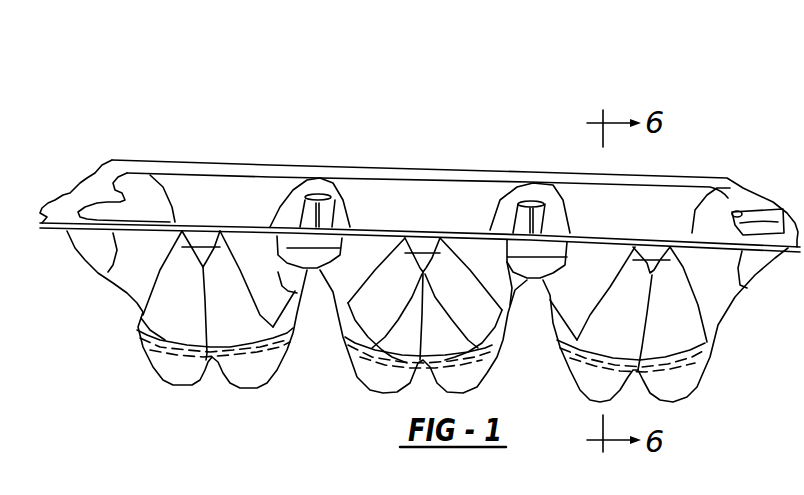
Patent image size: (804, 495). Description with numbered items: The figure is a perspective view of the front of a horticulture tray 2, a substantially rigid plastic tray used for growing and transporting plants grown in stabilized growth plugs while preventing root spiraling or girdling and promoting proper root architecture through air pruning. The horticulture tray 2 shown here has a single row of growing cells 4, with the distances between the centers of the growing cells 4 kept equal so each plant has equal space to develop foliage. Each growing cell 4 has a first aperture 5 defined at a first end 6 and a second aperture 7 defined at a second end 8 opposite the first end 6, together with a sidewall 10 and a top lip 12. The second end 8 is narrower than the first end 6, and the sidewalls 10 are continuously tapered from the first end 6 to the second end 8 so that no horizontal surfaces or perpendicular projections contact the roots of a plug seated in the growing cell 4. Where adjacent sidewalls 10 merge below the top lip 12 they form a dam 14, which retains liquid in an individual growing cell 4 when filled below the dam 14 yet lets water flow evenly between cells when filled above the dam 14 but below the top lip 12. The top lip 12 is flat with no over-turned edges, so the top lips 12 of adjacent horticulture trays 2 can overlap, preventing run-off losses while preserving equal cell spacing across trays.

The horticulture tray 2 is at (105, 115).
The growing cell 4 is at (237, 190).
The first aperture 5 is at (188, 188).
The first end 6 is at (83, 190).
The second aperture 7 is at (180, 388).
The second end 8 is at (215, 388).
The sidewall 10 is at (172, 305).
The top lip 12 is at (43, 230).
The dam 14 is at (320, 257).